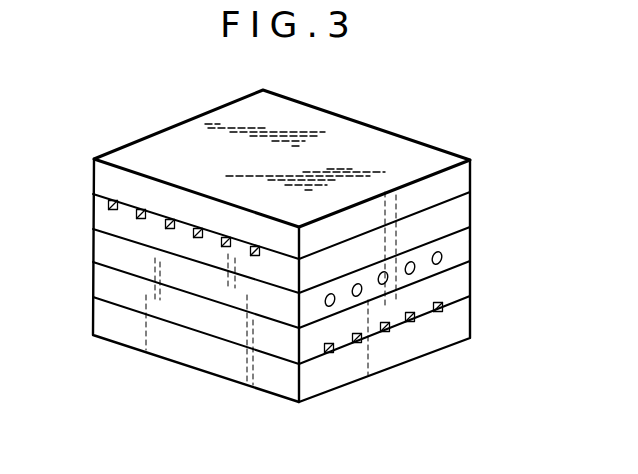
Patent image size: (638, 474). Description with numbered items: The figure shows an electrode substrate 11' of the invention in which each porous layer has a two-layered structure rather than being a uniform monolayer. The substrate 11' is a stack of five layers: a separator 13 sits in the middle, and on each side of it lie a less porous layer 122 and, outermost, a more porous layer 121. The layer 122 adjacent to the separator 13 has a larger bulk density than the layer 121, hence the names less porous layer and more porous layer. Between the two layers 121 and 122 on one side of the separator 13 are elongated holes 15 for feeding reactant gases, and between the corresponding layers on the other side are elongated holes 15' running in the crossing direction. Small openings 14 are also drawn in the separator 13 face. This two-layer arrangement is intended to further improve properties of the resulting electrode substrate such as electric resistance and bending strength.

The electrode substrate 11' is at (251, 246).
The more porous layer 121 is at (472, 182).
The less porous layer 122 is at (472, 218).
The separator 13 is at (472, 247).
The through holes 14 is at (442, 261).
The elongated holes 15 is at (176, 180).
The elongated holes 15' is at (400, 346).